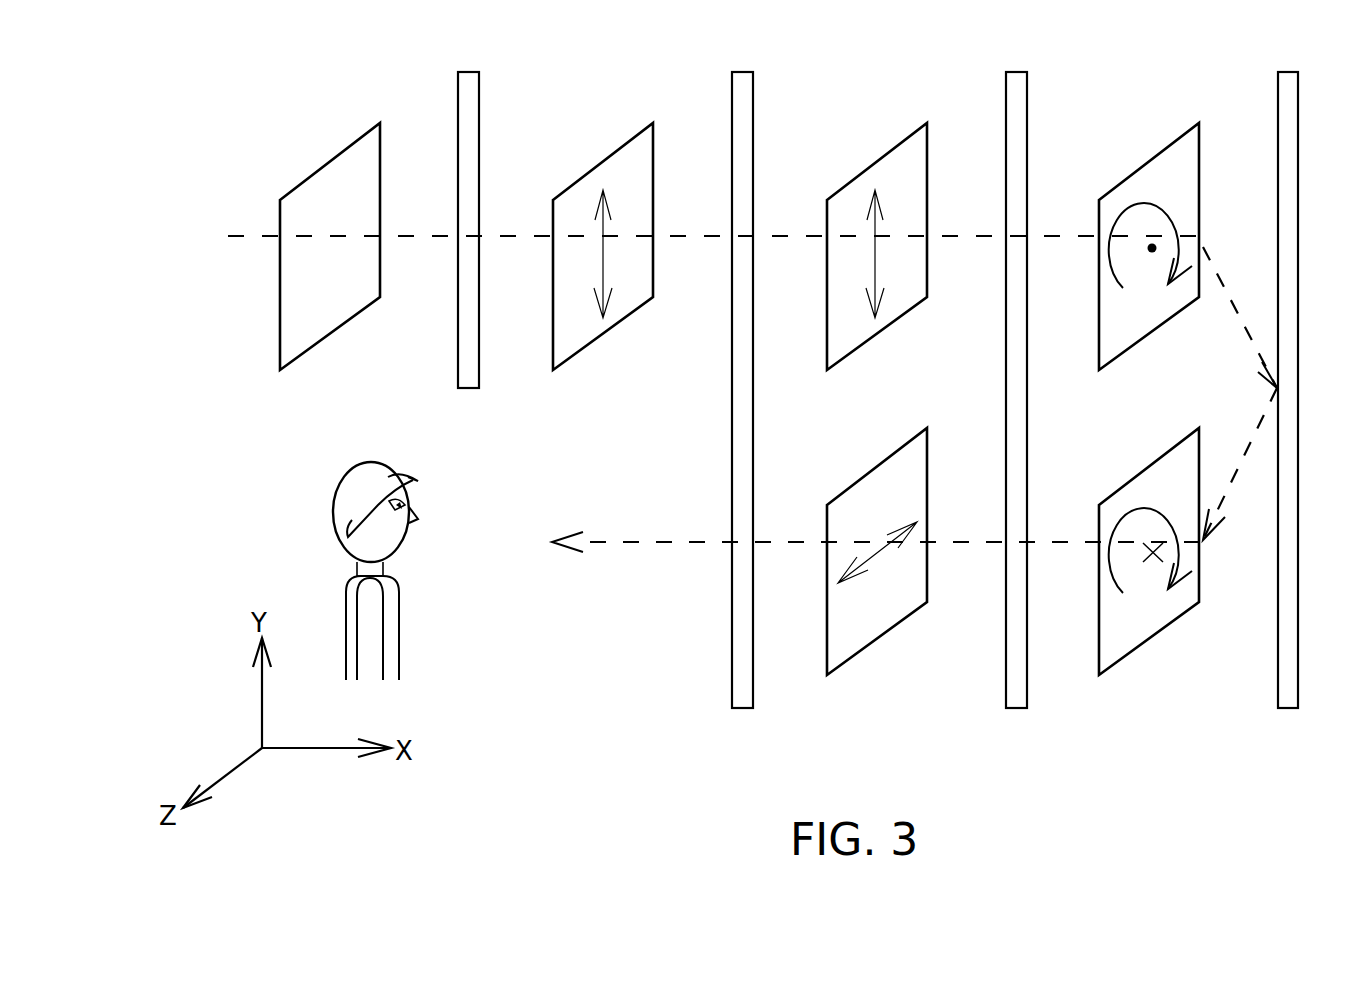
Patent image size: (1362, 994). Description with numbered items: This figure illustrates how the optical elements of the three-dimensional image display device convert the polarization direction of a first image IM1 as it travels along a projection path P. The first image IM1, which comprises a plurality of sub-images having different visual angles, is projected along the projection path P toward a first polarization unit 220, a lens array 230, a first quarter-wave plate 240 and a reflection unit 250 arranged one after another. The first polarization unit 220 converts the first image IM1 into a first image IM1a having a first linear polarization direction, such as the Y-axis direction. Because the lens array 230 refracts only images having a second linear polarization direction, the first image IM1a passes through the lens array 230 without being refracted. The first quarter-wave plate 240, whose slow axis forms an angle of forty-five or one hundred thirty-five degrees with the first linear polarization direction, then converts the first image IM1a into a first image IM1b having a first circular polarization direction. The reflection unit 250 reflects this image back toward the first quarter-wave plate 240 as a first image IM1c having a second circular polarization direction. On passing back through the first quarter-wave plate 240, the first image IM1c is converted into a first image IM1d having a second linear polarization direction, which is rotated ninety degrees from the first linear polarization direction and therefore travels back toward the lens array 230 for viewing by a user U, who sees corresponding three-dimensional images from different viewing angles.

The first polarization unit 220 is at (468, 70).
The lens array 230 is at (742, 70).
The first quarter-wave plate 240 is at (1016, 70).
The reflection unit 250 is at (1288, 70).
The first image IM1 is at (330, 333).
The first image having a first linear polarization direction IM1a is at (605, 333).
The first image having a first circular polarization direction IM1b is at (1152, 333).
The first image having a second circular polarization direction IM1c is at (1152, 637).
The first image having a second linear polarization direction IM1d is at (877, 637).
The projection path P is at (977, 232).
The user U is at (335, 490).